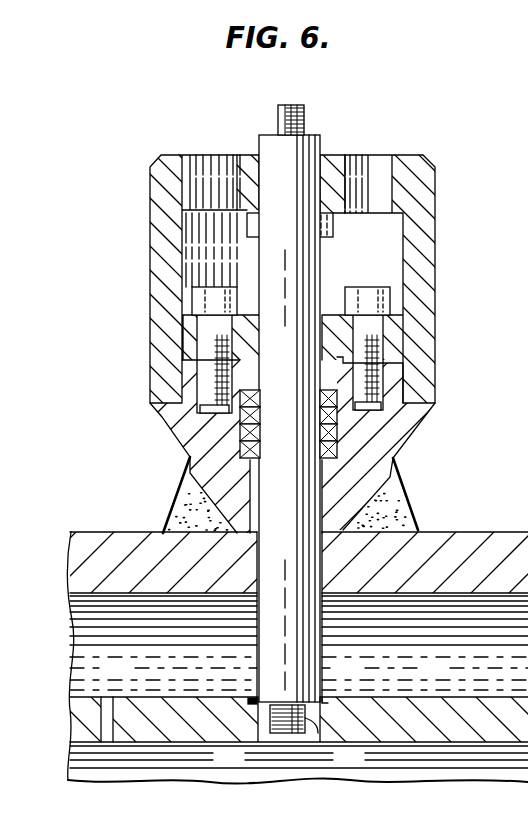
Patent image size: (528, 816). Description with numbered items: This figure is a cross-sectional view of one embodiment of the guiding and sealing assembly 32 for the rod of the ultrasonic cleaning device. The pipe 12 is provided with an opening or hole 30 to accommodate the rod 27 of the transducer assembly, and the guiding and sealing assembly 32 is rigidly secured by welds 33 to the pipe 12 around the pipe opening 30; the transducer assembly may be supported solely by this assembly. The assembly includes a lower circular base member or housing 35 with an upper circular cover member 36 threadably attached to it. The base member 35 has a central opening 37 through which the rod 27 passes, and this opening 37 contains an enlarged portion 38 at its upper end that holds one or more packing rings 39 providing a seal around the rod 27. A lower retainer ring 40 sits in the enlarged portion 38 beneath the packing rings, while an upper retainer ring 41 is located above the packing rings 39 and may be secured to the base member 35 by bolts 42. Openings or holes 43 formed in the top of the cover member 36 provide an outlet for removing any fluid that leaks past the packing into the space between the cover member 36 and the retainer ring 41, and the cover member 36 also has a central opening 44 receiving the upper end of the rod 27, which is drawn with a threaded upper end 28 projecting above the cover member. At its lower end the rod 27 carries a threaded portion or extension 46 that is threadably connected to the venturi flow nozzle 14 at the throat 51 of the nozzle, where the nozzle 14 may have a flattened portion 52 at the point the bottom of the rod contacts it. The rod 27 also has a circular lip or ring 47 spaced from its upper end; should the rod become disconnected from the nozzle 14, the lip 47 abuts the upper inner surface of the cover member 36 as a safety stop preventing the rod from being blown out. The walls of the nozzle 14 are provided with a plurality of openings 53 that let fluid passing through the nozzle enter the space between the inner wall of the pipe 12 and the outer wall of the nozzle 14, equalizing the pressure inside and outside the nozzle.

The pipe 12 is at (496, 532).
The venturi flow nozzle 14 is at (414, 699).
The rod 27 is at (320, 268).
The threaded bolt end 28 is at (305, 113).
The opening or hole 30 is at (303, 566).
The guiding and sealing assembly 32 is at (264, 408).
The welds 33 is at (176, 520).
The base member 35 is at (420, 432).
The cover member 36 is at (437, 242).
The central opening 37 is at (246, 468).
The enlarged portion 38 is at (250, 397).
The packing rings 39 is at (394, 458).
The lower retainer ring 40 is at (404, 500).
The upper retainer ring 41 is at (393, 328).
The bolts 42 is at (390, 374).
The openings or holes 43 is at (368, 172).
The central opening 44 is at (256, 155).
The threaded portion or extension 46 is at (318, 736).
The circular lip or ring 47 is at (336, 224).
The throat 51 is at (252, 746).
The flattened portion 52 is at (325, 692).
The openings 53 is at (108, 699).